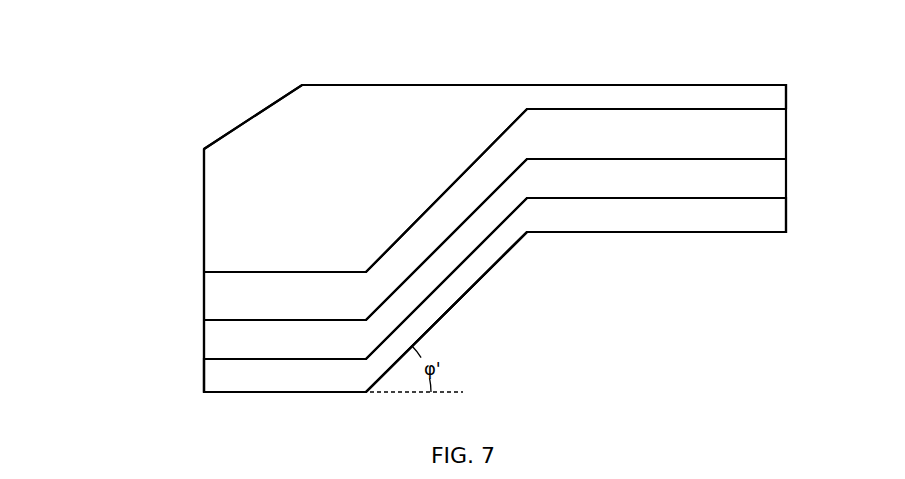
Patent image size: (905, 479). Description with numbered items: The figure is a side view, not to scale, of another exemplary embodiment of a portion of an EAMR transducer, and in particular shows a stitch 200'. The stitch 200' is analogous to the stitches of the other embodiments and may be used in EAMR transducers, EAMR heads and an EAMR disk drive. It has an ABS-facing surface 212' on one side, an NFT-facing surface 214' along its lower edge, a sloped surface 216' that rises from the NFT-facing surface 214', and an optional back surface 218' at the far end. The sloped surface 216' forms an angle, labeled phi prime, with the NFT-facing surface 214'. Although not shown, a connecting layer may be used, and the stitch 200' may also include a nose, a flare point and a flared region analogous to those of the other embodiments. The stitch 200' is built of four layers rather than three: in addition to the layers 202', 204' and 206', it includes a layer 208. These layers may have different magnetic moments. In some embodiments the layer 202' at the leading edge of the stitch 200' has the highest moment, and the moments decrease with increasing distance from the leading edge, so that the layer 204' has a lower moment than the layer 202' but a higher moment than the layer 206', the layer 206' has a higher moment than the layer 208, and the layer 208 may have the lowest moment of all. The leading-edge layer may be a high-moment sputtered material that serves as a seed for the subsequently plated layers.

The stitch 200' is at (495, 209).
The layer 202' is at (522, 273).
The layer 204' is at (451, 259).
The layer 206' is at (451, 214).
The layer 208 is at (204, 213).
The ABS-facing surface 212' is at (128, 270).
The NFT-facing surface 214' is at (285, 417).
The sloped surface 216' is at (456, 312).
The back surface 218' is at (656, 261).